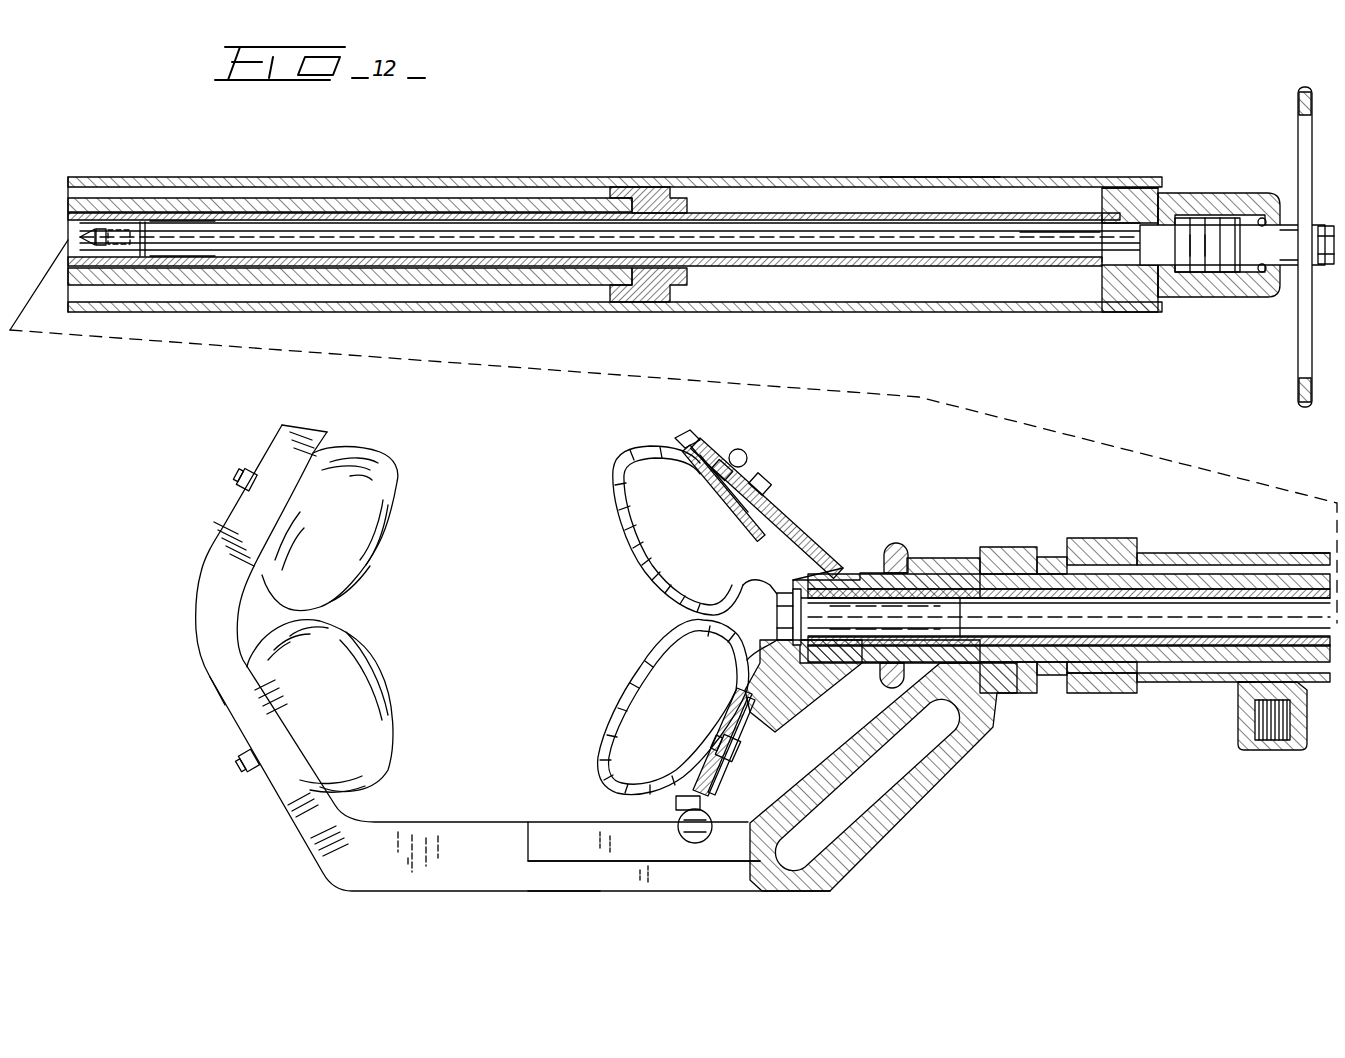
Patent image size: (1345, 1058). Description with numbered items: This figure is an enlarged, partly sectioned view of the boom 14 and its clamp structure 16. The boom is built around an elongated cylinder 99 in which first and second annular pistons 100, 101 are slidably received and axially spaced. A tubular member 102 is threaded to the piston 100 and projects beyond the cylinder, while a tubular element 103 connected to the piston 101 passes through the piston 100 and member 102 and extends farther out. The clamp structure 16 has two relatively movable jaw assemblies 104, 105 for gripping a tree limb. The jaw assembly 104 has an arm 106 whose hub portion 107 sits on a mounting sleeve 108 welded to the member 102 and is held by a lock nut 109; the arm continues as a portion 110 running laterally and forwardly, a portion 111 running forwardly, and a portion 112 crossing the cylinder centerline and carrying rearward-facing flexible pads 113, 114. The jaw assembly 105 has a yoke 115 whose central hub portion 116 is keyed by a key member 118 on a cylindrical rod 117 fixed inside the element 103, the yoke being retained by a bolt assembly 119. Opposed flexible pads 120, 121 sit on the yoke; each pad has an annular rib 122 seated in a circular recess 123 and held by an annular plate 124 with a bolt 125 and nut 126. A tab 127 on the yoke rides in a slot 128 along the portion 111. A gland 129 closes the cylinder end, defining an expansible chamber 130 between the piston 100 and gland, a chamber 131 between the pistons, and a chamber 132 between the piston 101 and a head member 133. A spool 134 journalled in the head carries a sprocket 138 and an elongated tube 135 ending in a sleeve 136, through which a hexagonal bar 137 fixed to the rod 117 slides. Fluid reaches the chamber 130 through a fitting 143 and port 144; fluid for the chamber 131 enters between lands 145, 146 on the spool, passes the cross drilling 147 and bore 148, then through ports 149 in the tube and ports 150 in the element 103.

The boom 14 is at (810, 172).
The clamp structure 16 is at (507, 541).
The elongated cylinder 99 is at (956, 183).
The first annular piston 100 is at (645, 195).
The second annular piston 101 is at (1120, 193).
The tubular member 102 is at (490, 205).
The tubular element 103 is at (990, 214).
The jaw assembly 104 is at (217, 531).
The jaw assembly 105 is at (815, 490).
The arm 106 is at (491, 818).
The hub portion 107 is at (1007, 547).
The mounting sleeve 108 is at (970, 667).
The lock nut 109 is at (886, 542).
The arm portion 110 is at (920, 790).
The arm portion 111 is at (532, 890).
The arm portion 112 is at (205, 682).
The flexible pad 113 is at (389, 718).
The flexible pad 114 is at (381, 539).
The yoke 115 is at (831, 675).
The central hub portion 116 is at (821, 578).
The cylindrical rod 117 is at (72, 237).
The key member 118 is at (882, 612).
The bolt assembly 119 is at (776, 615).
The flexible pad 120 is at (604, 738).
The flexible pad 121 is at (633, 554).
The annular rib 122 is at (716, 470).
The circular recess 123 is at (765, 478).
The annular plate 124 is at (750, 534).
The bolt 125 is at (740, 521).
The nut 126 is at (748, 462).
The tab 127 is at (677, 829).
The slot 128 is at (564, 839).
The gland 129 is at (1057, 547).
The annular expansible chamber 130 is at (345, 188).
The expansible chamber 131 is at (905, 188).
The third expansible chamber 132 is at (1170, 273).
The head member 133 is at (1243, 192).
The spool 134 is at (1237, 255).
The elongated tube 135 is at (1047, 230).
The sleeve 136 is at (173, 257).
The elongated bar 137 is at (147, 252).
The sprocket 138 is at (1297, 147).
The fitting 143 is at (1240, 732).
The port 144 is at (1238, 690).
The annular land 145 is at (1195, 213).
The annular land 146 is at (1220, 205).
The cross drilling 147 is at (1212, 254).
The bore 148 is at (1190, 248).
The ports 149 is at (213, 223).
The ports 150 is at (1093, 217).